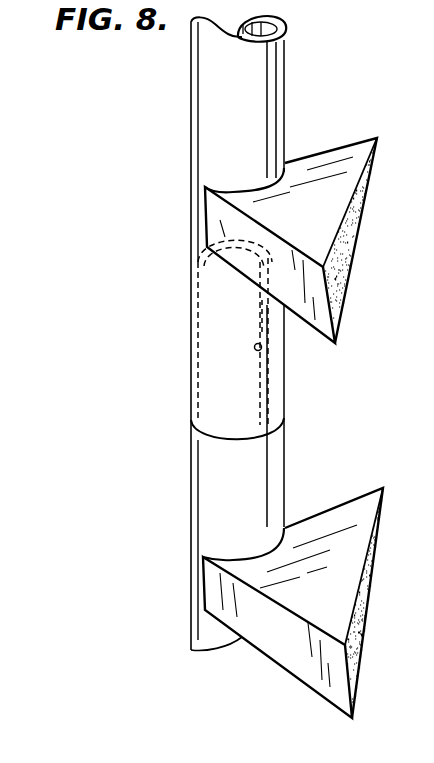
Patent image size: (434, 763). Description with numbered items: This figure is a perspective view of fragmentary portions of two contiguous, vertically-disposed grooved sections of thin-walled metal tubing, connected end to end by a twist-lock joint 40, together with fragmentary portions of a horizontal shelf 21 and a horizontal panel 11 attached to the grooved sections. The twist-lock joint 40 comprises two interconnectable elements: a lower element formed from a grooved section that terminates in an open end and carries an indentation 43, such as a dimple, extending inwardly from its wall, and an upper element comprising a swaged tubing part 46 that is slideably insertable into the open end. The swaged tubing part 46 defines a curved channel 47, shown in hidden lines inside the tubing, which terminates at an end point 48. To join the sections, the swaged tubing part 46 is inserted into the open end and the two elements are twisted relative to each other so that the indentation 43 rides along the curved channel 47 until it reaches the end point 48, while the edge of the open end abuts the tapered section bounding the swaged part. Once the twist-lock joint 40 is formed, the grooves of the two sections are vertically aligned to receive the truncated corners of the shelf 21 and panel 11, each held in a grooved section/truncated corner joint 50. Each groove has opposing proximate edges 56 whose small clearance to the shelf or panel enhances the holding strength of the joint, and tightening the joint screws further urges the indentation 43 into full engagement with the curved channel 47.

The panel 11 is at (290, 657).
The shelf 21 is at (318, 350).
The twist-lock joint 40 is at (170, 358).
The indentation 43 is at (285, 444).
The swaged tubing part 46 is at (192, 274).
The curved channel 47 is at (258, 313).
The end point 48 is at (255, 350).
The grooved section/truncated corner joint 50 is at (185, 213).
The proximate edge 56 is at (249, 178).